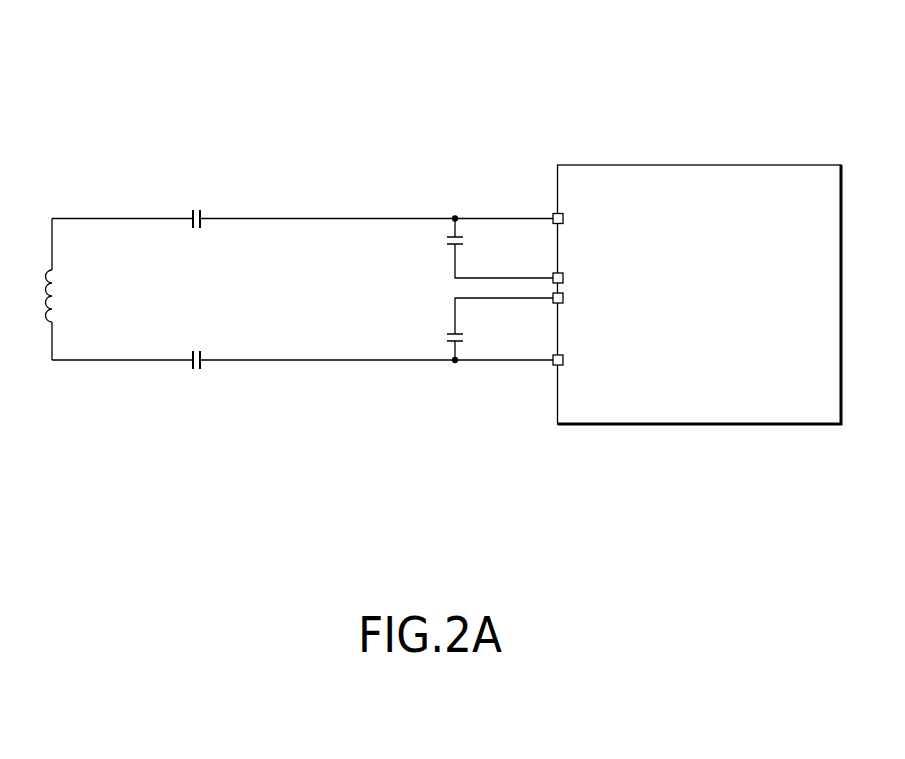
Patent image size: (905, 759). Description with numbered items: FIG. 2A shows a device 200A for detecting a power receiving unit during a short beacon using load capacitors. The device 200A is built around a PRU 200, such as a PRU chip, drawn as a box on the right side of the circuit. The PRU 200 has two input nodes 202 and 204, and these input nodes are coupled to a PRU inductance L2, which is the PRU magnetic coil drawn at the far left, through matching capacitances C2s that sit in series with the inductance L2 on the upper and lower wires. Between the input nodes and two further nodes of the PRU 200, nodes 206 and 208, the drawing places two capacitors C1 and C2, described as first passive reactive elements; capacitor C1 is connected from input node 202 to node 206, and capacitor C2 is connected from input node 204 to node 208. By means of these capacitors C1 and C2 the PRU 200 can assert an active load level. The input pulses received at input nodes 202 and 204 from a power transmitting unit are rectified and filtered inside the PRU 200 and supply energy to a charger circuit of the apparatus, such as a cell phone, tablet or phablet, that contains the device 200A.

The device 200A is at (126, 116).
The PRU 200 is at (736, 324).
The input node 202 is at (563, 219).
The input node 204 is at (563, 360).
The node 206 is at (563, 279).
The node 208 is at (563, 299).
The PRU inductance L2 is at (65, 296).
The matching capacitances C2s is at (202, 274).
The capacitor C1 is at (502, 249).
The capacitor C2 is at (502, 329).